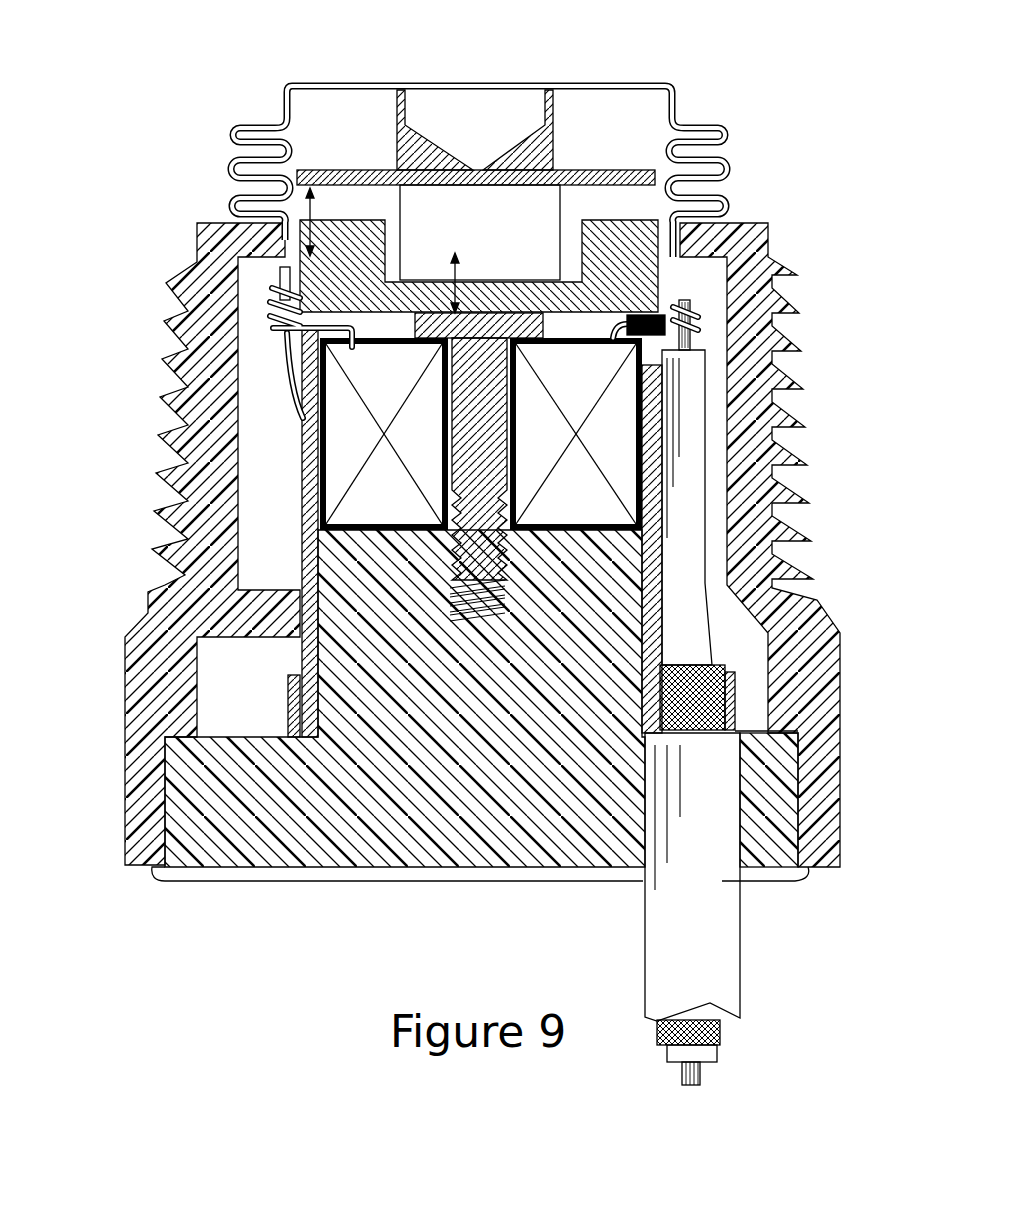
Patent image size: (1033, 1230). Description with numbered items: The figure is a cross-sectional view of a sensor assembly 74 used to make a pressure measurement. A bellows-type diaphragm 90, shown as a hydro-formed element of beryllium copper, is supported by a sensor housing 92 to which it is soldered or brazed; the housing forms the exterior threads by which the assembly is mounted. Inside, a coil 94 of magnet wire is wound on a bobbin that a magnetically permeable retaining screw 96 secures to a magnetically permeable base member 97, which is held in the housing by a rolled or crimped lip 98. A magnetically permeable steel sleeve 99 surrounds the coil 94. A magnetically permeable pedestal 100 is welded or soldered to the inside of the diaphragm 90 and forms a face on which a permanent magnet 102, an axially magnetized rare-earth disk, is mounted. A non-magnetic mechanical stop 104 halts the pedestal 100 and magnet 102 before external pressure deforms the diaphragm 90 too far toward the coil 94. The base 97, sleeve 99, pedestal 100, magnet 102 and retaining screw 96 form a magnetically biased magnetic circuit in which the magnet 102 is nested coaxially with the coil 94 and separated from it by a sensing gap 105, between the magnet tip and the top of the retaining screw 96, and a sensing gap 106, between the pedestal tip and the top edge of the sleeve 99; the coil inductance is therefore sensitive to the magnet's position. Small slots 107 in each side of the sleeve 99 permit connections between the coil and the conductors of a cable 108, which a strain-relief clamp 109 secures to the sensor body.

The sensor assembly 74 is at (855, 663).
The diaphragm 90 is at (734, 128).
The sensor housing 92 is at (753, 252).
The coil 94 is at (382, 382).
The retaining screw 96 is at (478, 492).
The base member 97 is at (378, 838).
The lip 98 is at (162, 880).
The sleeve 99 is at (310, 433).
The pedestal 100 is at (597, 170).
The permanent magnet 102 is at (515, 213).
The mechanical stop 104 is at (608, 253).
The sensing gap 105 is at (452, 278).
The sensing gap 106 is at (307, 210).
The slots 107 is at (307, 298).
The cable 108 is at (671, 963).
The strain-relief clamp 109 is at (296, 700).